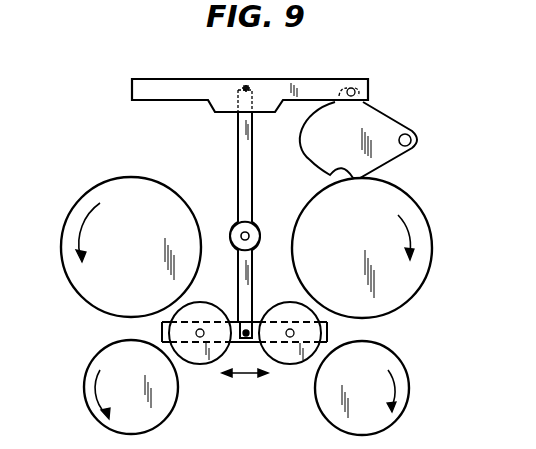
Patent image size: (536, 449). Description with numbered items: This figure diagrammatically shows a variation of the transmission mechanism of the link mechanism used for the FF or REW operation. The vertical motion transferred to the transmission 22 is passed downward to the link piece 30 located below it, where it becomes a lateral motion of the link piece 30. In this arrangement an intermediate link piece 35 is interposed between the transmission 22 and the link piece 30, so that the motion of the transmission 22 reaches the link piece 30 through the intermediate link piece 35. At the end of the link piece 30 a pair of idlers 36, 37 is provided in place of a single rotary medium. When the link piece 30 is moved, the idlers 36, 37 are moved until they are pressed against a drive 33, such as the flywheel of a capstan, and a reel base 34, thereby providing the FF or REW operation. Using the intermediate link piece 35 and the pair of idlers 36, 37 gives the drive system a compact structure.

The transmission 22 is at (355, 90).
The link piece 30 is at (238, 165).
The drive 33 is at (113, 193).
The reel base 34 is at (94, 416).
The intermediate link piece 35 is at (185, 87).
The idler 36 is at (202, 362).
The idler 37 is at (289, 360).